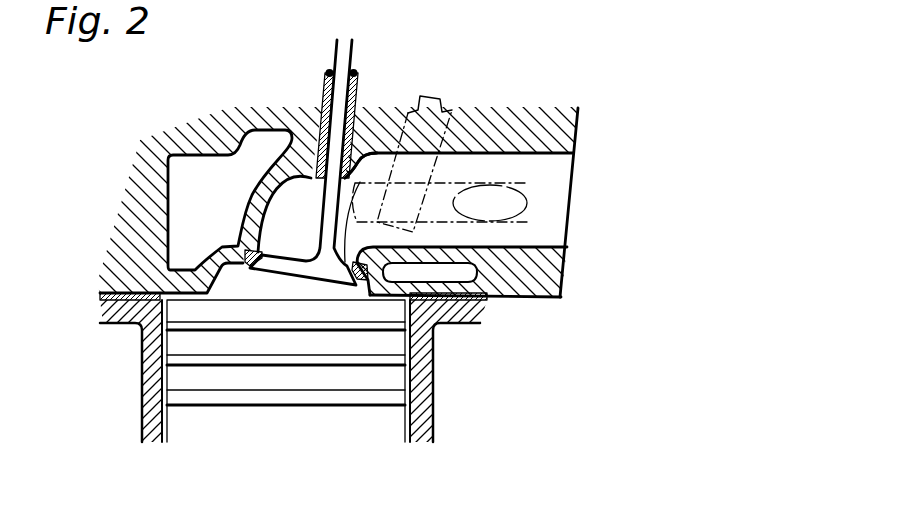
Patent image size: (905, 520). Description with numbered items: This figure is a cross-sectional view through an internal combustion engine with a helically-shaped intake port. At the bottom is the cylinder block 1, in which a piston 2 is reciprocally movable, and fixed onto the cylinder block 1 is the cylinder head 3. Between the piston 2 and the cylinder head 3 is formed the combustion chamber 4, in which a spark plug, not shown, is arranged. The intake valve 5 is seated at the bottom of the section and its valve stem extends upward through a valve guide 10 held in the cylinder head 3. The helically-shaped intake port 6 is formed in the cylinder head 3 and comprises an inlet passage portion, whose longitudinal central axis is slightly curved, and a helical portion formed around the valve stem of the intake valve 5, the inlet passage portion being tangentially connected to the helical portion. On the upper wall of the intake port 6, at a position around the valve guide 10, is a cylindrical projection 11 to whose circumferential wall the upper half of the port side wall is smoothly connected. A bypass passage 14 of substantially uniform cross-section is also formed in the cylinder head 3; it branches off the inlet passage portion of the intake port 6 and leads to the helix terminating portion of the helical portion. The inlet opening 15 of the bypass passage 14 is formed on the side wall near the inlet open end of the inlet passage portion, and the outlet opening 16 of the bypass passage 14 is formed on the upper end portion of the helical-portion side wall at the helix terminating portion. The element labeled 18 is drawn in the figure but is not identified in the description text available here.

The cylinder block 1 is at (148, 388).
The piston 2 is at (195, 420).
The cylinder head 3 is at (158, 218).
The combustion chamber 4 is at (238, 292).
The intake valve 5 is at (312, 205).
The helically-shaped intake port 6 is at (462, 174).
The valve guide 10 is at (347, 78).
The cylindrical projection 11 is at (350, 164).
The bypass passage 14 is at (447, 212).
The inlet opening 15 is at (524, 212).
The outlet opening 16 is at (348, 272).
The fuel injector 18 is at (440, 97).